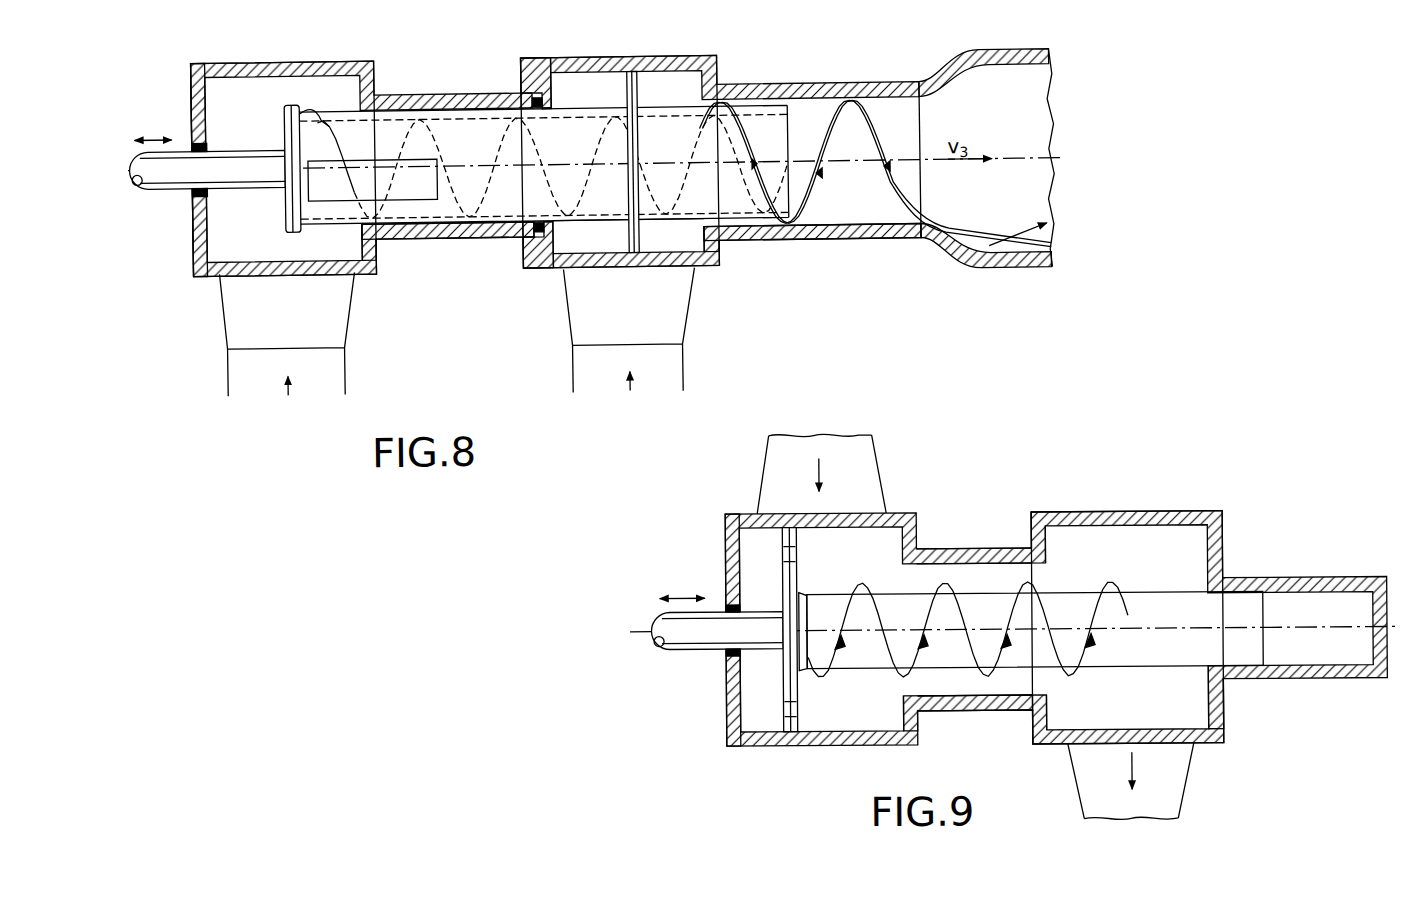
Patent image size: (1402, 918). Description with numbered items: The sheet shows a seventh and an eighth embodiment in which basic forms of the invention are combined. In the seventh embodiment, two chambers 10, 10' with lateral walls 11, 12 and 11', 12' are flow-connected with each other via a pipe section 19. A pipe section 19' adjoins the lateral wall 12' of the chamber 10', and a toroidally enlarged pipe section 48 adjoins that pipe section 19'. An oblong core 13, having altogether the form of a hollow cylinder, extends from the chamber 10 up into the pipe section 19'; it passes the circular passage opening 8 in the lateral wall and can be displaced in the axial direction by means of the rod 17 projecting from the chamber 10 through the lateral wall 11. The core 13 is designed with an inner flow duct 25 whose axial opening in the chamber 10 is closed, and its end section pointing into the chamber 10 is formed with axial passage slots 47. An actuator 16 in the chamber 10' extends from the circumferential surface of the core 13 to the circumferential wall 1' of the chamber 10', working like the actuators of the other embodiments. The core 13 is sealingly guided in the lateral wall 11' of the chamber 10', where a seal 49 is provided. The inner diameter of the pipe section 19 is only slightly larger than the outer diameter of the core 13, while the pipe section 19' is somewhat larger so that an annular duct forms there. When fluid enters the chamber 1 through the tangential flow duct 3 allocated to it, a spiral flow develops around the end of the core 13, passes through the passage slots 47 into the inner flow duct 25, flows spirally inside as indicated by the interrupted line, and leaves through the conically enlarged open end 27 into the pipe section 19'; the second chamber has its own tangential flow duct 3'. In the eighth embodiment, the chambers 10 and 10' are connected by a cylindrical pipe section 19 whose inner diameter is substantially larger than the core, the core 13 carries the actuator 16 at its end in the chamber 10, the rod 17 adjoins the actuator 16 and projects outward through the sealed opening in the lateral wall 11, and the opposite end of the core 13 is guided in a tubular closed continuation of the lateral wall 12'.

In FIG. 8, the chamber 1 is at (283, 145).
In FIG. 8, the circumferential wall 1' is at (620, 136).
In FIG. 8, the tangential flow duct 3 is at (297, 337).
In FIG. 9, the tangential flow duct 3 is at (829, 474).
In FIG. 8, the tangential flow duct 3' is at (642, 332).
In FIG. 9, the tangential flow duct 3' is at (1117, 781).
In FIG. 9, the circular passage opening 8 is at (913, 578).
In FIG. 8, the chamber 10 is at (362, 144).
In FIG. 9, the chamber 10 is at (1036, 605).
In FIG. 8, the chamber 10' is at (721, 136).
In FIG. 9, the chamber 10' is at (1154, 621).
In FIG. 8, the lateral wall 11 is at (179, 171).
In FIG. 9, the lateral wall 11 is at (714, 630).
In FIG. 8, the lateral wall 11' is at (524, 176).
In FIG. 9, the lateral wall 11' is at (1022, 640).
In FIG. 8, the lateral wall 12 is at (387, 260).
In FIG. 9, the lateral wall 12 is at (930, 734).
In FIG. 8, the lateral wall 12' is at (738, 253).
In FIG. 9, the lateral wall 12' is at (1239, 697).
In FIG. 8, the oblong core 13 is at (576, 228).
In FIG. 9, the oblong core 13 is at (963, 582).
In FIG. 8, the actuator 16 is at (641, 233).
In FIG. 9, the actuator 16 is at (788, 732).
In FIG. 8, the rod 17 is at (162, 174).
In FIG. 9, the rod 17 is at (680, 647).
In FIG. 8, the pipe section 19 is at (448, 251).
In FIG. 9, the pipe section 19 is at (974, 719).
In FIG. 8, the pipe section 19' is at (813, 252).
In FIG. 8, the inner flow duct 25 is at (467, 128).
In FIG. 8, the conically enlarged open end 27 is at (777, 115).
In FIG. 8, the axial passage slots 47 is at (326, 186).
In FIG. 8, the toroidally enlarged pipe section 48 is at (944, 258).
In FIG. 8, the seal 49 is at (533, 234).